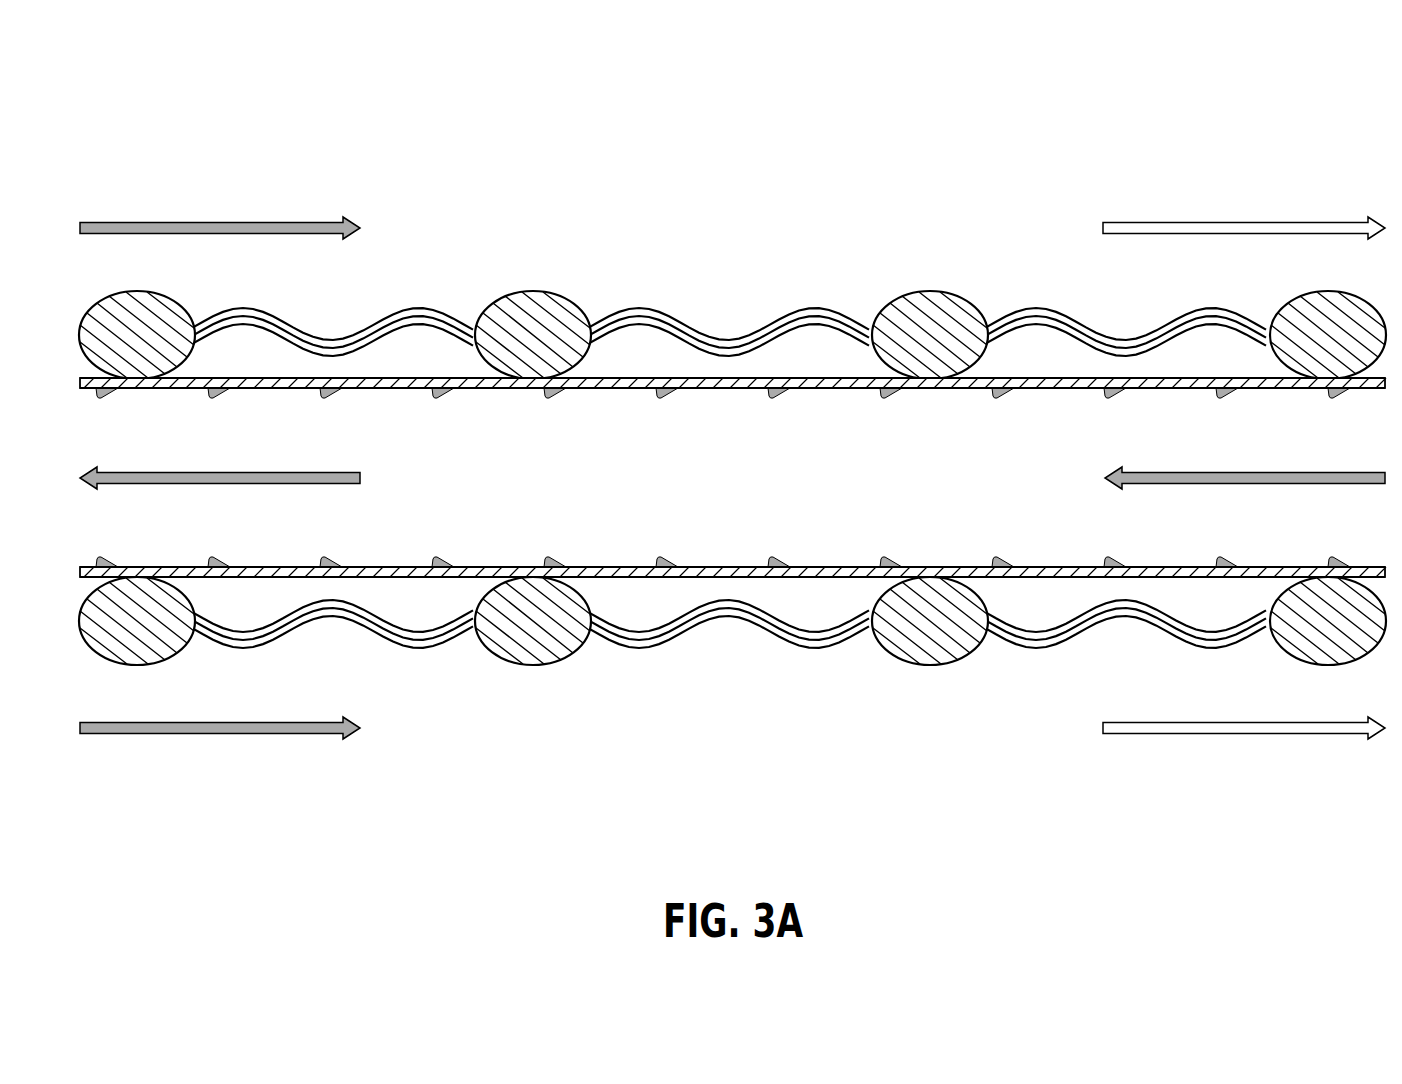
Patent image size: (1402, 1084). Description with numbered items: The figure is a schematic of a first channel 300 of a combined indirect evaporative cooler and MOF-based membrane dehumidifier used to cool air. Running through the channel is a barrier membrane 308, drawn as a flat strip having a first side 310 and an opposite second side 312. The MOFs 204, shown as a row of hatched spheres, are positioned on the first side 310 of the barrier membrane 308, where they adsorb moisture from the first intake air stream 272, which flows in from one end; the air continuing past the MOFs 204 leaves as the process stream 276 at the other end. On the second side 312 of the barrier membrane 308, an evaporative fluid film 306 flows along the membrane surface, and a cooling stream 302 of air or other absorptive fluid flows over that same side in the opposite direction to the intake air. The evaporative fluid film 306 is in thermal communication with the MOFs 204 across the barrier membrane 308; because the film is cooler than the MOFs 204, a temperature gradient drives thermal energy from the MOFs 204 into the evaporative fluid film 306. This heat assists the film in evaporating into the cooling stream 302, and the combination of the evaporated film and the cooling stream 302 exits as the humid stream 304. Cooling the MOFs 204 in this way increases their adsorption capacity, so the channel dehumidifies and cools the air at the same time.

The first channel 300 is at (93, 119).
The MOFs 204 is at (137, 291).
The first intake air stream 272 is at (222, 221).
The process stream 276 is at (1253, 221).
The cooling stream 302 is at (1253, 471).
The humid stream 304 is at (168, 471).
The evaporative fluid film 306 is at (890, 393).
The barrier membrane 308 is at (625, 389).
The first side 310 is at (268, 378).
The second side 312 is at (290, 394).